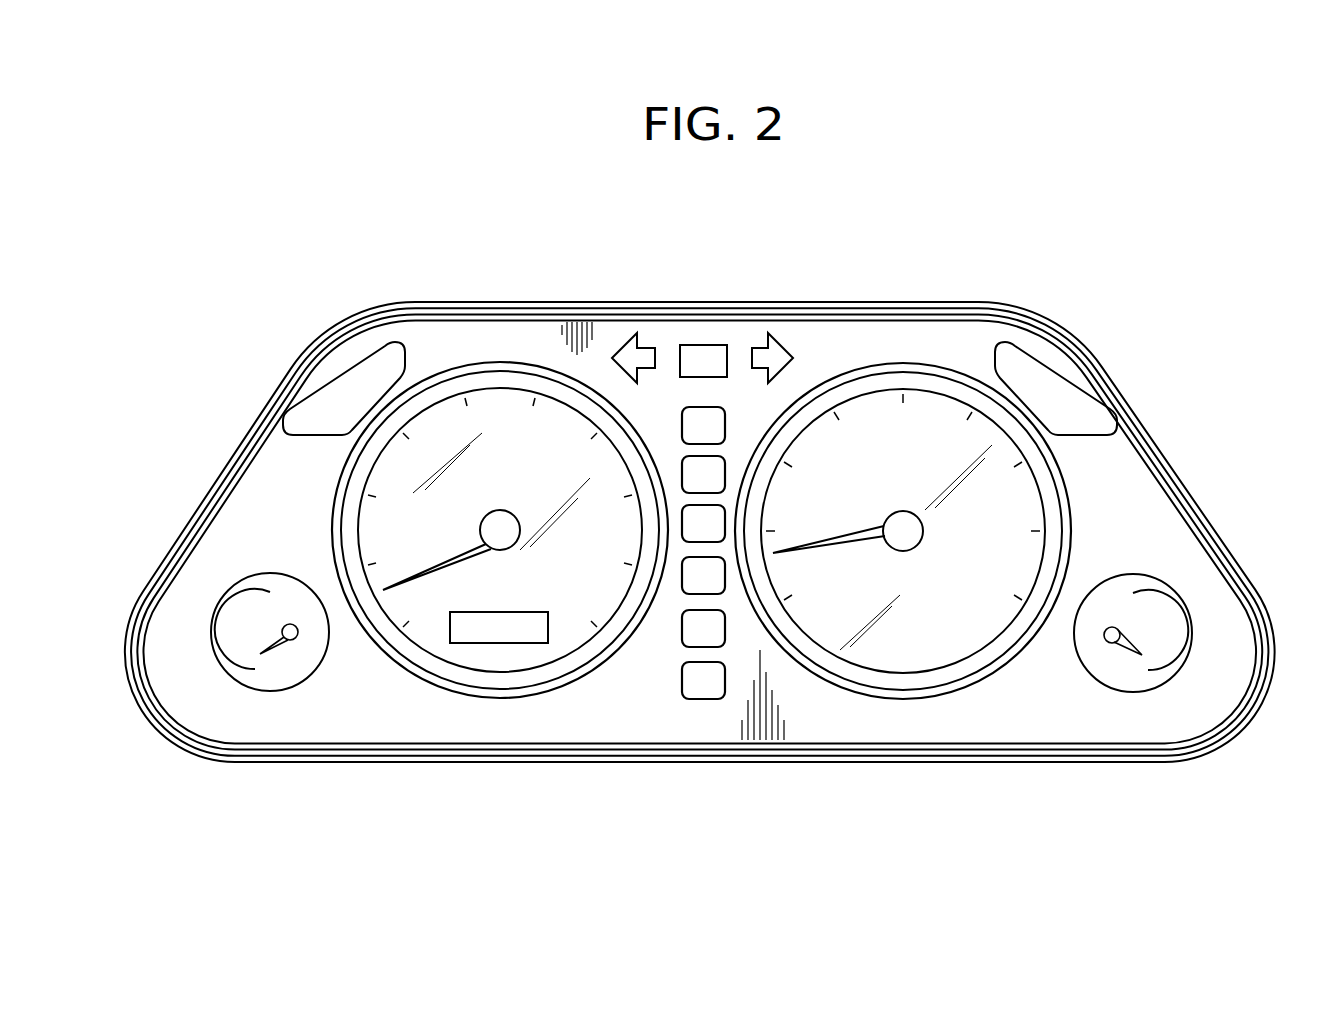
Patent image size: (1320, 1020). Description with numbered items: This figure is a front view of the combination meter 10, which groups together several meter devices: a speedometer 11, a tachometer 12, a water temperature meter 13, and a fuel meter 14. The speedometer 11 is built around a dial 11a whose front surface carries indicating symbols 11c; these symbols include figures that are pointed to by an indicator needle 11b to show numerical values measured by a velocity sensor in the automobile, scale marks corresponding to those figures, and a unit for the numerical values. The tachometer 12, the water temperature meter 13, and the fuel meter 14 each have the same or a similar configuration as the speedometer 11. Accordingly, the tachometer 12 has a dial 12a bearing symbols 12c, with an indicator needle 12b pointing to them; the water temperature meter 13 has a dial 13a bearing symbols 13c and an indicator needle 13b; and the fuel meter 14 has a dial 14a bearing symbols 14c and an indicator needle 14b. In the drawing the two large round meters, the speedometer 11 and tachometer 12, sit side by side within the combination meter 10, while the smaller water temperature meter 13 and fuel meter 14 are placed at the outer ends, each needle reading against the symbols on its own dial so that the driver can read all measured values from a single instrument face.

The combination meter 10 is at (784, 268).
The speedometer 11 is at (462, 442).
The dial 11a is at (562, 641).
The indicator needle 11b is at (450, 566).
The indicating symbols 11c is at (372, 556).
The tachometer 12 is at (903, 480).
The dial 12a is at (948, 650).
The indicator needle 12b is at (858, 538).
The symbols 12c is at (905, 405).
The water temperature meter 13 is at (1168, 616).
The dial 13a is at (1110, 672).
The indicator needle 13b is at (1110, 642).
The symbols 13c is at (1123, 588).
The fuel meter 14 is at (250, 634).
The dial 14a is at (295, 666).
The indicator needle 14b is at (292, 641).
The symbols 14c is at (233, 648).